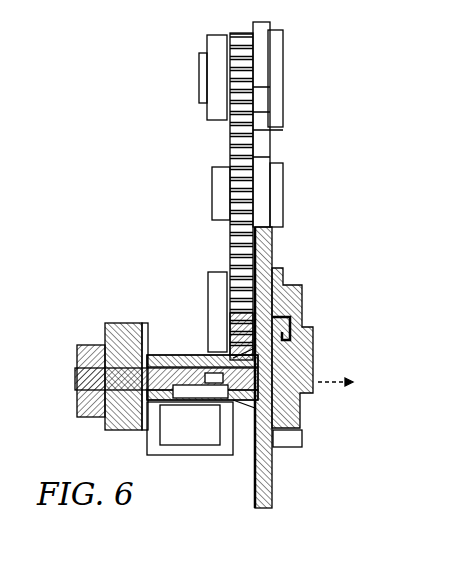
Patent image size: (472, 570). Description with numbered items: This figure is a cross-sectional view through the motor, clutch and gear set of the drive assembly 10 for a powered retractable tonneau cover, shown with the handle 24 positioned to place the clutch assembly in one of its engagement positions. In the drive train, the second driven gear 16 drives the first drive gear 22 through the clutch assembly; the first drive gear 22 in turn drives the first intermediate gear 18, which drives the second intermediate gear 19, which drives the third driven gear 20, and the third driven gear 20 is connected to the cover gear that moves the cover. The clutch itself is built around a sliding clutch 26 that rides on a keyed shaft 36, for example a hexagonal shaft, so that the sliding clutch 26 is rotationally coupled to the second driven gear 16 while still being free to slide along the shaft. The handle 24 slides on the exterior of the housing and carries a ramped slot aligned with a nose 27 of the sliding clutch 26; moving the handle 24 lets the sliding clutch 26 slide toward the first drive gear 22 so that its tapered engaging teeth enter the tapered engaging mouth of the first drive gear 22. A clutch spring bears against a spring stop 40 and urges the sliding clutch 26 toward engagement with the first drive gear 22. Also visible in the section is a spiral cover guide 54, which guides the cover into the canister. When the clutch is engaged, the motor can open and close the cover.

The drive assembly 10 is at (93, 200).
The second driven gear 16 is at (130, 325).
The first intermediate gear 18 is at (208, 284).
The second intermediate gear 19 is at (226, 193).
The third driven gear 20 is at (226, 76).
The first drive gear 22 is at (243, 413).
The handle 24 is at (316, 354).
The sliding clutch 26 is at (203, 360).
The nose 27 is at (290, 428).
The keyed shaft 36 is at (173, 360).
The spring stop 40 is at (222, 400).
The spiral cover guide 54 is at (308, 397).